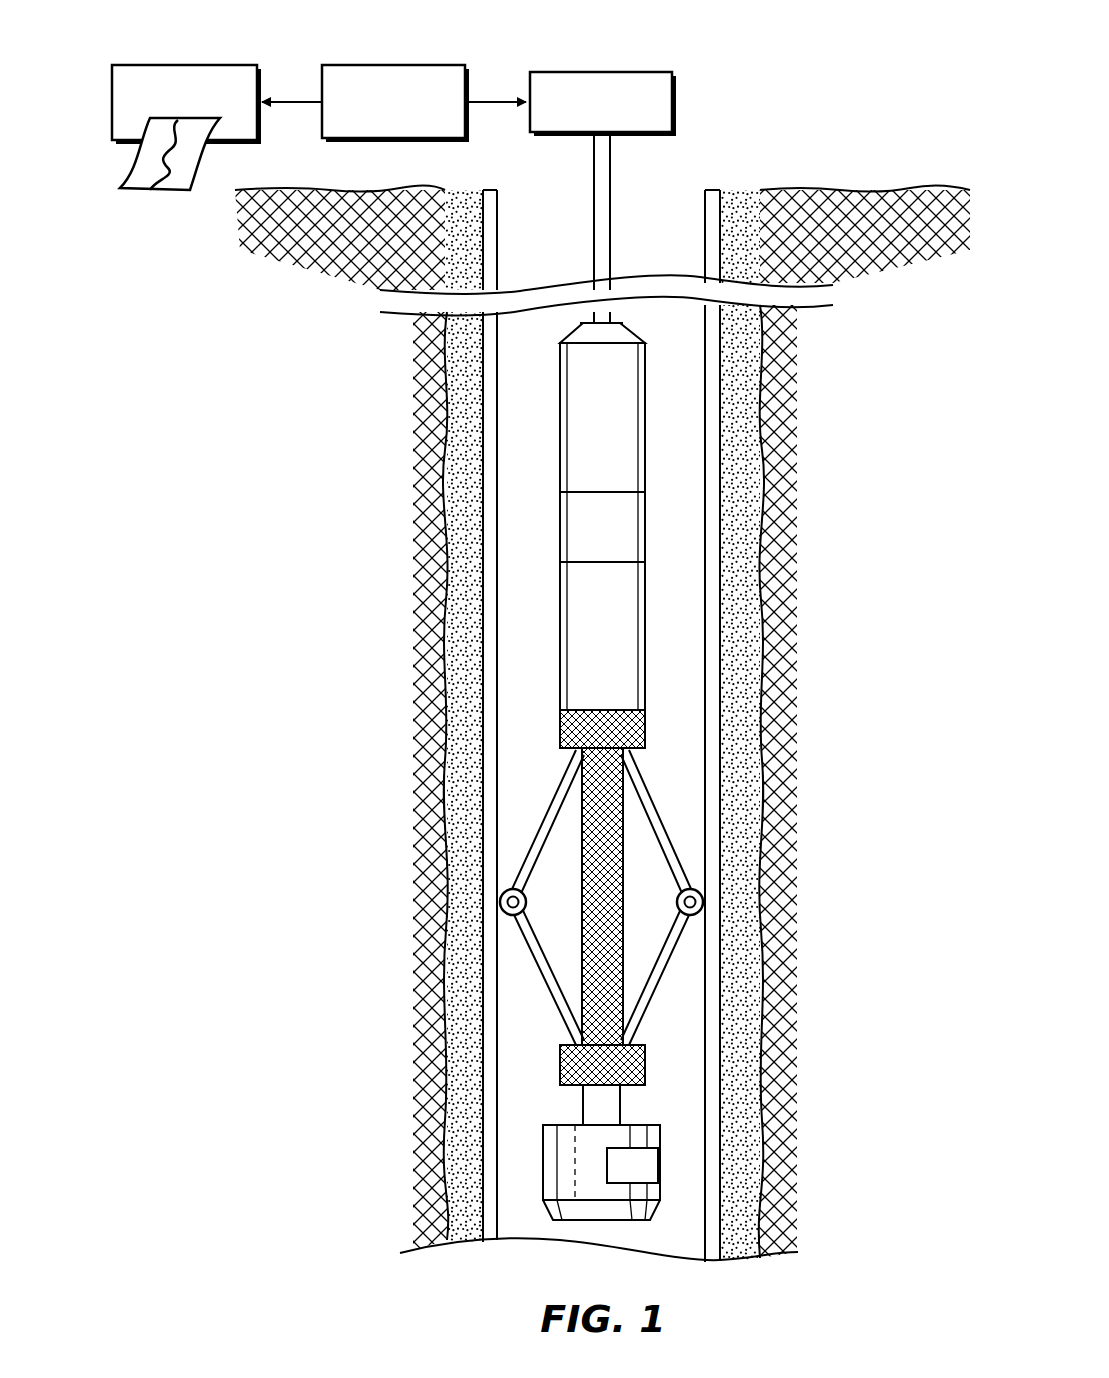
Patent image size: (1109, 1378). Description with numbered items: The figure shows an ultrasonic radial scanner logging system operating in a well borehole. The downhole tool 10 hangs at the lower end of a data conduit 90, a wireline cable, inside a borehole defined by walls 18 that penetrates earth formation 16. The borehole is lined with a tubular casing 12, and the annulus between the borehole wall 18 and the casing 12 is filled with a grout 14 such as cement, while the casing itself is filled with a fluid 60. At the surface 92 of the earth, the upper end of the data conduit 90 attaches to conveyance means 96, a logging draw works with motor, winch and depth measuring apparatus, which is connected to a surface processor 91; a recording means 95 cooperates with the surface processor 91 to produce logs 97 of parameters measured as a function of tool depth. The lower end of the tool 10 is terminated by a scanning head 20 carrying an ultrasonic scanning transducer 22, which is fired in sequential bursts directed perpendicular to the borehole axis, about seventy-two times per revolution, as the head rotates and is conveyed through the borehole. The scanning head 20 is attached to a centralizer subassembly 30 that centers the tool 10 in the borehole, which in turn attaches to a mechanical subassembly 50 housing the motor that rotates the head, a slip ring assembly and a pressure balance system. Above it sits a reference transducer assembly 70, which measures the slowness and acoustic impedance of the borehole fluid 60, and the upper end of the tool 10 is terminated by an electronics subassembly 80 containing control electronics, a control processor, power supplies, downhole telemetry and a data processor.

The downhole apparatus or tool 10 is at (715, 30).
The tubular casing 12 is at (482, 414).
The grout 14 is at (464, 440).
The earth formation 16 is at (602, 240).
The borehole walls 18 is at (444, 478).
The scanning head 20 is at (575, 1140).
The ultrasonic scanning transducer 22 is at (632, 1140).
The centralizer subassembly 30 is at (622, 822).
The mechanical subassembly 50 is at (558, 634).
The fluid 60 is at (578, 516).
The reference transducer assembly 70 is at (558, 530).
The electronics subassembly 80 is at (558, 418).
The data conduit 90 is at (612, 186).
The surface processor 91 is at (347, 65).
The surface of the earth 92 is at (776, 190).
The recording means 95 is at (137, 65).
The conveyance means 96 is at (676, 108).
The logs 97 is at (134, 190).